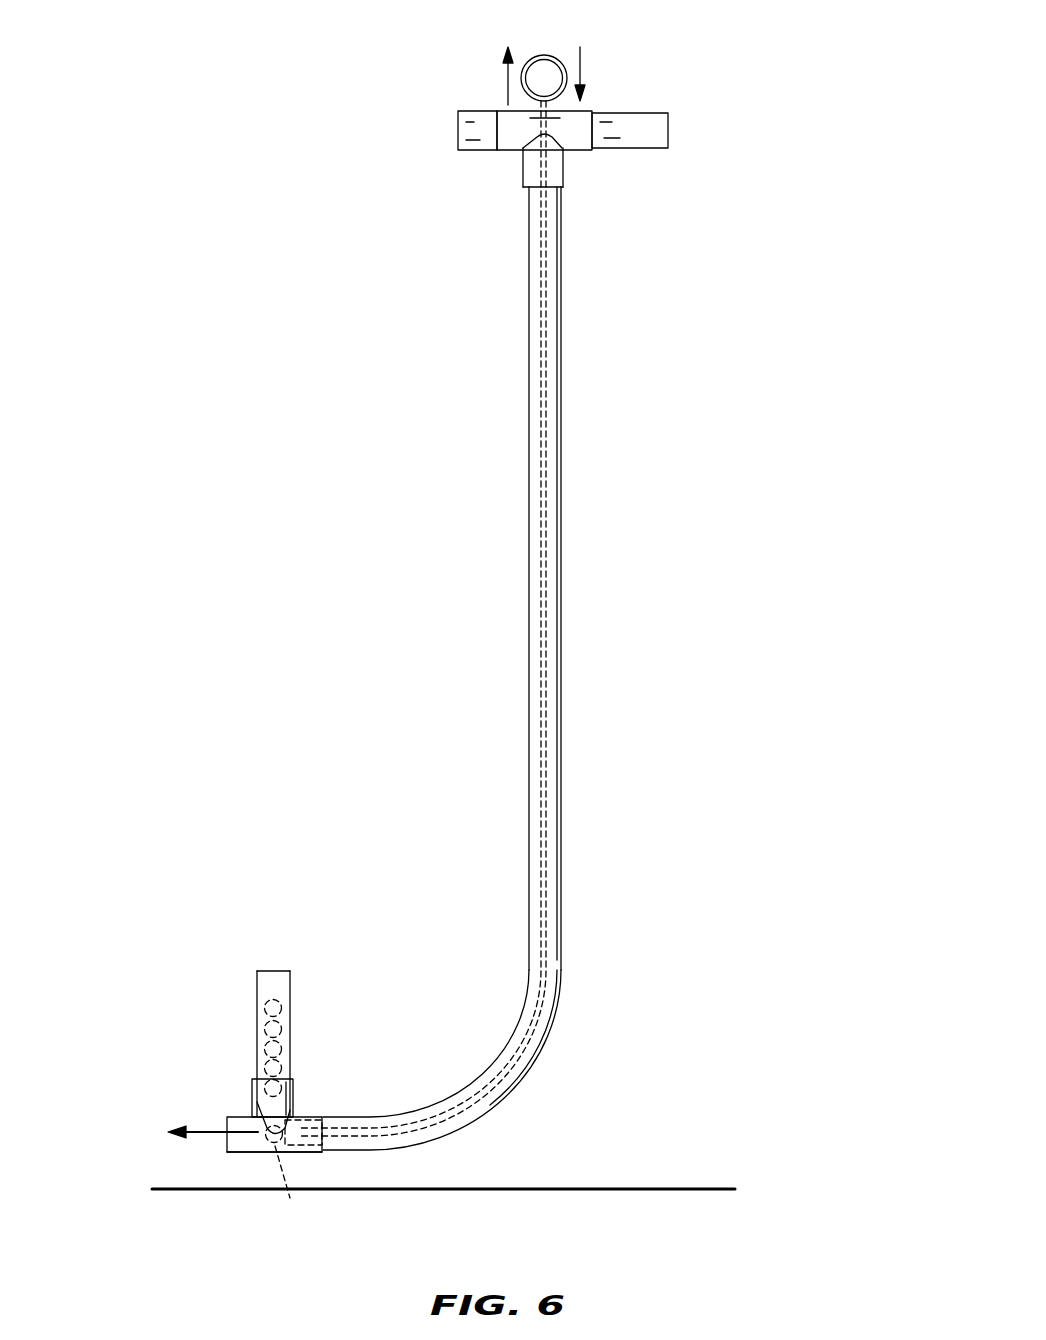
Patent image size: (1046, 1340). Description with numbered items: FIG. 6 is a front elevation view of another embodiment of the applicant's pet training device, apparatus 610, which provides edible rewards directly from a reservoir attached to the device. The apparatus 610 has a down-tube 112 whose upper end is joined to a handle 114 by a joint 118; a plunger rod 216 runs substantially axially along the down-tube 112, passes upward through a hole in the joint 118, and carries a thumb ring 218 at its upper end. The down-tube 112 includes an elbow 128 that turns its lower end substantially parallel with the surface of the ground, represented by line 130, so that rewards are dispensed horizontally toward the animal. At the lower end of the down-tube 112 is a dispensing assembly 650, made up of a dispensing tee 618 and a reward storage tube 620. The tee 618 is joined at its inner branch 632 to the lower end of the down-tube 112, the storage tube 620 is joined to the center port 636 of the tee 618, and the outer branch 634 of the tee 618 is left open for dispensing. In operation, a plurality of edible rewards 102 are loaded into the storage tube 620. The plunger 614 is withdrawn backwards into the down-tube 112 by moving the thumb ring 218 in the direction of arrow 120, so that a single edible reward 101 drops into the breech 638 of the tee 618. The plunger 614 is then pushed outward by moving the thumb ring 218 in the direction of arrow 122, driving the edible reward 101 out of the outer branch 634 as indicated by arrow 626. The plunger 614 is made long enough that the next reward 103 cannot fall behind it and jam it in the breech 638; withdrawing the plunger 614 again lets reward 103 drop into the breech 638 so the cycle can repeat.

The edible reward 101 is at (273, 1120).
The edible rewards 102 is at (264, 1010).
The edible reward 103 is at (271, 1088).
The down-tube 112 is at (530, 617).
The handle 114 is at (668, 133).
The joint 118 is at (523, 140).
The arrow 120 is at (505, 77).
The arrow 122 is at (585, 77).
The elbow 128 is at (542, 1047).
The line 130 is at (583, 1188).
The plunger rod 216 is at (540, 470).
The thumb ring 218 is at (545, 56).
The apparatus 610 is at (614, 712).
The plunger 614 is at (317, 1115).
The dispensing tee 618 is at (228, 1122).
The reward storage tube 620 is at (291, 978).
The arrow 626 is at (212, 1133).
The inner branch 632 is at (310, 1153).
The outer branch 634 is at (252, 1153).
The center port 636 is at (292, 1098).
The breech 638 is at (292, 1190).
The dispensing assembly 650 is at (366, 999).